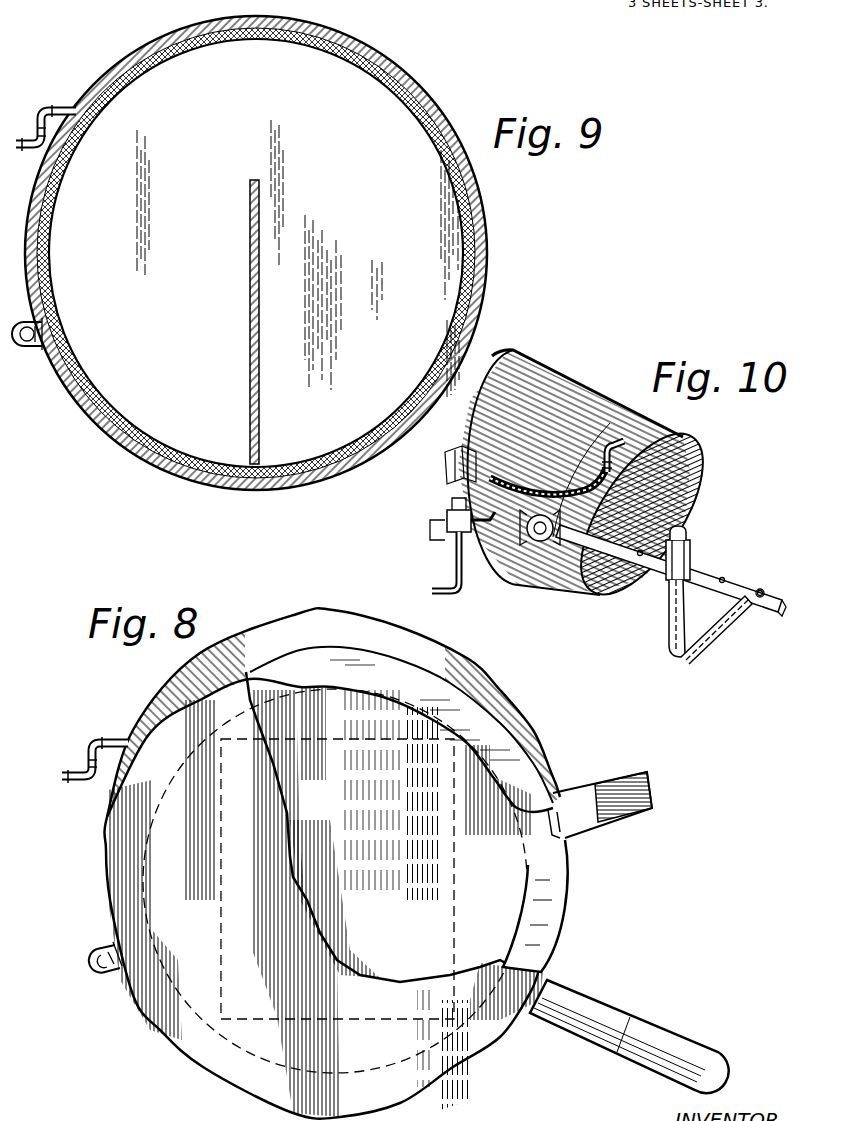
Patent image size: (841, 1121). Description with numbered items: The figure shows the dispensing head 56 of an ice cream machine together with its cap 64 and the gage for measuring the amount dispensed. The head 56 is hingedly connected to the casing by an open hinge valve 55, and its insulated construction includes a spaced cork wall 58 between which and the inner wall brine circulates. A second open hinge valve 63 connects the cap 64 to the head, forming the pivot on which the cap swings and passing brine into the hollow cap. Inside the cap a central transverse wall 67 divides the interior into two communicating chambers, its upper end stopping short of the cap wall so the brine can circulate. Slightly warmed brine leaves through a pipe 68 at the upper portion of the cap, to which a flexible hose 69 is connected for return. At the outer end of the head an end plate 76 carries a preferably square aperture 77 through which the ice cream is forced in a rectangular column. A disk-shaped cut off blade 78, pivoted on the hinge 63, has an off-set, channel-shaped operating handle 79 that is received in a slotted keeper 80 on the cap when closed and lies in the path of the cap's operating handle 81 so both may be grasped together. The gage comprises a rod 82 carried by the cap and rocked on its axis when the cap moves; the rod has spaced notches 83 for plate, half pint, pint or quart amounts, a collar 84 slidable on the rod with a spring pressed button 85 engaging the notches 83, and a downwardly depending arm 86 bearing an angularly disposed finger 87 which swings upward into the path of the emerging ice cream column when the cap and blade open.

In FIG. 10, the open hinge valve 55 is at (455, 522).
In FIG. 10, the head 56 is at (576, 393).
In FIG. 8, the head 56 is at (291, 630).
In FIG. 9, the cork wall 58 is at (154, 52).
In FIG. 10, the open hinge valve 63 is at (535, 541).
In FIG. 10, the cap 64 is at (667, 478).
In FIG. 8, the cap 64 is at (237, 1067).
In FIG. 9, the central transverse wall 67 is at (259, 283).
In FIG. 9, the pipe 68 is at (66, 110).
In FIG. 10, the pipe 68 is at (627, 447).
In FIG. 8, the pipe 68 is at (108, 724).
In FIG. 10, the flexible hose 69 is at (538, 488).
In FIG. 8, the end plate 76 is at (514, 763).
In FIG. 8, the aperture 77 is at (380, 827).
In FIG. 8, the cut off blade 78 is at (563, 903).
In FIG. 8, the operating handle 79 is at (620, 777).
In FIG. 8, the slotted keeper 80 is at (560, 837).
In FIG. 8, the operating handle 81 is at (686, 1026).
In FIG. 10, the rod 82 is at (707, 568).
In FIG. 10, the notches 83 is at (760, 588).
In FIG. 10, the collar 84 is at (665, 571).
In FIG. 10, the spring pressed button 85 is at (687, 538).
In FIG. 10, the downwardly depending arm 86 is at (672, 615).
In FIG. 10, the angularly disposed finger 87 is at (727, 612).